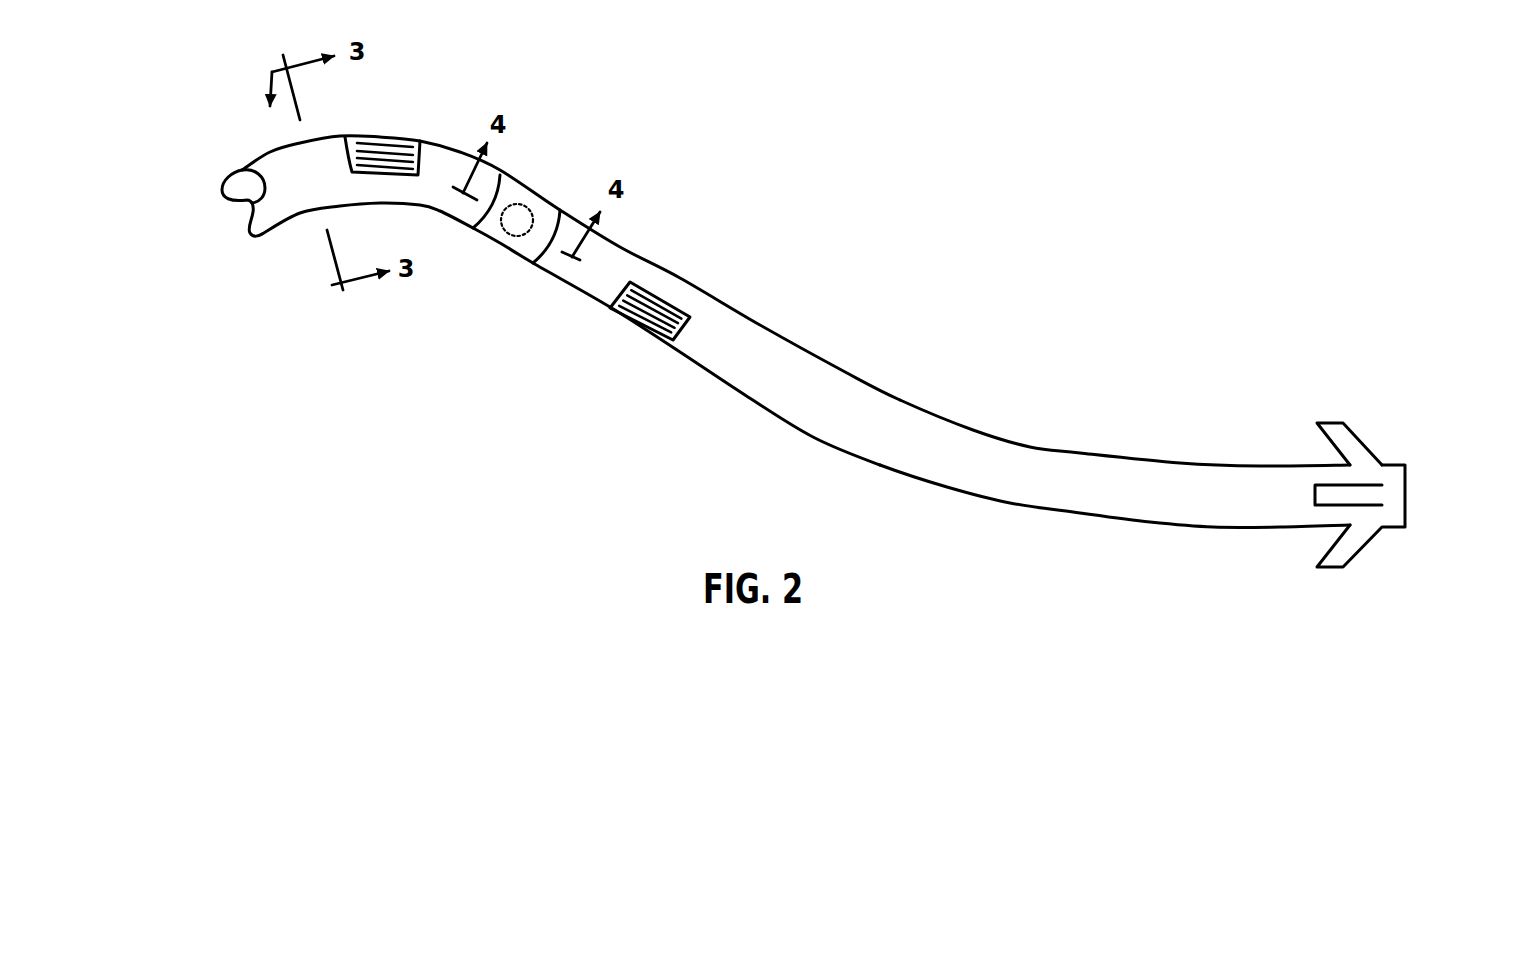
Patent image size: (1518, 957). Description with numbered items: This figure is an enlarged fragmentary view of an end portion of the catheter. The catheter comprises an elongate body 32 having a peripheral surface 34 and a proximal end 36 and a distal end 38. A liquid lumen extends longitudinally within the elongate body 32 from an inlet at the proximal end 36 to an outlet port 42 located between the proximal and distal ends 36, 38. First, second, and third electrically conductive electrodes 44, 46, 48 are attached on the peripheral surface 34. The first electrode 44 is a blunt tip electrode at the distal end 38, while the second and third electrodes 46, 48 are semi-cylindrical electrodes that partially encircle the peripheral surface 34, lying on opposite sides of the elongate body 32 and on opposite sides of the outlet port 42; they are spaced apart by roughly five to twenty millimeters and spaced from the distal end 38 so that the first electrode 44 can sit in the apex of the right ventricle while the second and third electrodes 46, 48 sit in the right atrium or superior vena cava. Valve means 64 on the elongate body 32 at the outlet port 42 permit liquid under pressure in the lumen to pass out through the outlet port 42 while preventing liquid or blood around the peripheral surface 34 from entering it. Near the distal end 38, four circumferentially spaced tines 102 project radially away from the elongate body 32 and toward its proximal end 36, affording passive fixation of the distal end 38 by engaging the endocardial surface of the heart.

The elongate body 32 is at (973, 433).
The peripheral surface 34 is at (852, 377).
The proximal end 36 is at (215, 204).
The distal end 38 is at (1374, 463).
The outlet port 42 is at (512, 227).
The first electrode 44 is at (1405, 492).
The second electrode 46 is at (640, 328).
The third electrode 48 is at (390, 135).
The valve means 64 is at (533, 200).
The tines 102 is at (1330, 423).